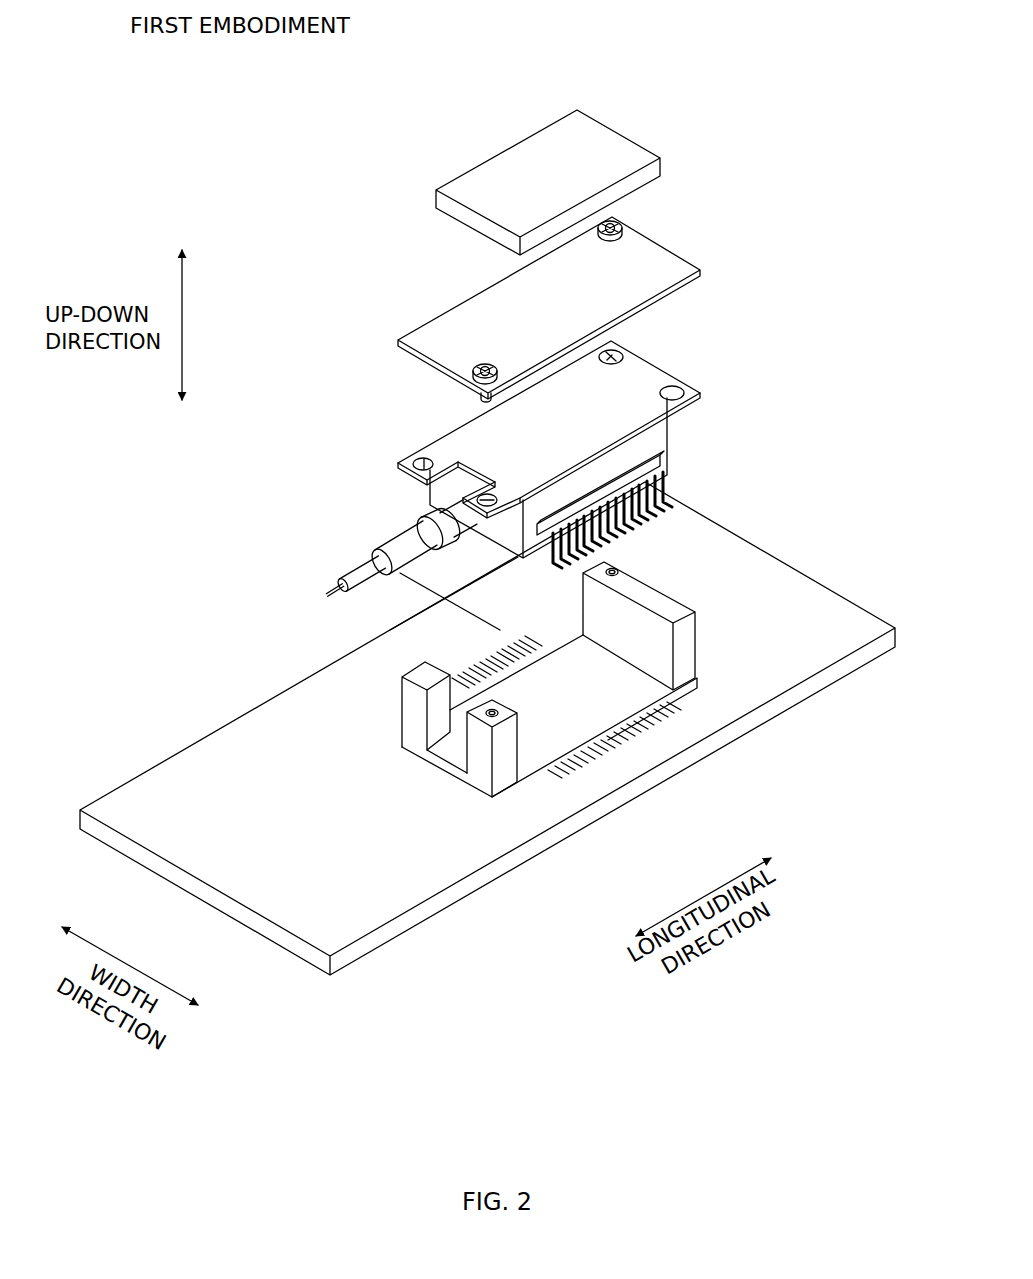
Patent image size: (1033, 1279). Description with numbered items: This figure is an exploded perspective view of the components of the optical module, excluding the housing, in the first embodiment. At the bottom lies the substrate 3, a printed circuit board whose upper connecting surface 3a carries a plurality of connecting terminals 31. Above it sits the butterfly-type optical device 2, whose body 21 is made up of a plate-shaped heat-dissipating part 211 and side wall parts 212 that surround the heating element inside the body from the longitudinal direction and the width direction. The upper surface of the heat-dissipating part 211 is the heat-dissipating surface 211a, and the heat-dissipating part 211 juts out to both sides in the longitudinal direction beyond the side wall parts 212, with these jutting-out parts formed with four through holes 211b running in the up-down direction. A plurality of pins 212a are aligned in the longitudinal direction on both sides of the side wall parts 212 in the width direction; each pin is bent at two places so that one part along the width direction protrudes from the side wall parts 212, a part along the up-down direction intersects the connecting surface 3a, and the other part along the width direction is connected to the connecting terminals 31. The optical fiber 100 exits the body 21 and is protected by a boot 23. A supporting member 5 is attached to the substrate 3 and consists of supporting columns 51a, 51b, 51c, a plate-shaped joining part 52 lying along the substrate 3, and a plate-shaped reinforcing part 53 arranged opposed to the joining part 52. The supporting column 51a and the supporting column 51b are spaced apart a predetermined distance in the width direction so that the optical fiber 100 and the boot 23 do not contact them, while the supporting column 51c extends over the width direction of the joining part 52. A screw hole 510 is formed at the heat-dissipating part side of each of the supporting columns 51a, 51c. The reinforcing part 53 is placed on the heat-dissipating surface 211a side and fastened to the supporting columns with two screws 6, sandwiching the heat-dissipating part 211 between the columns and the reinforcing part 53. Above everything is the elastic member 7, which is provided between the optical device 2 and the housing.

The optical device 2 is at (292, 549).
The substrate 3 is at (203, 888).
The connecting surface 3a is at (201, 744).
The supporting member 5 is at (704, 571).
The screws 6 is at (623, 227).
The elastic member 7 is at (608, 150).
The body 21 is at (773, 328).
The boot 23 is at (381, 596).
The connecting terminals 31 is at (514, 639).
The supporting column 51a is at (486, 728).
The supporting column 51b is at (412, 719).
The supporting column 51c is at (690, 646).
The joining part 52 is at (665, 713).
The reinforcing part 53 is at (660, 268).
The optical fiber 100 is at (326, 593).
The heat-dissipating part 211 is at (662, 371).
The heat-dissipating surface 211a is at (458, 437).
The through holes 211b is at (618, 356).
The side wall parts 212 is at (664, 441).
The pins 212a is at (673, 503).
The screw hole 510 is at (618, 576).